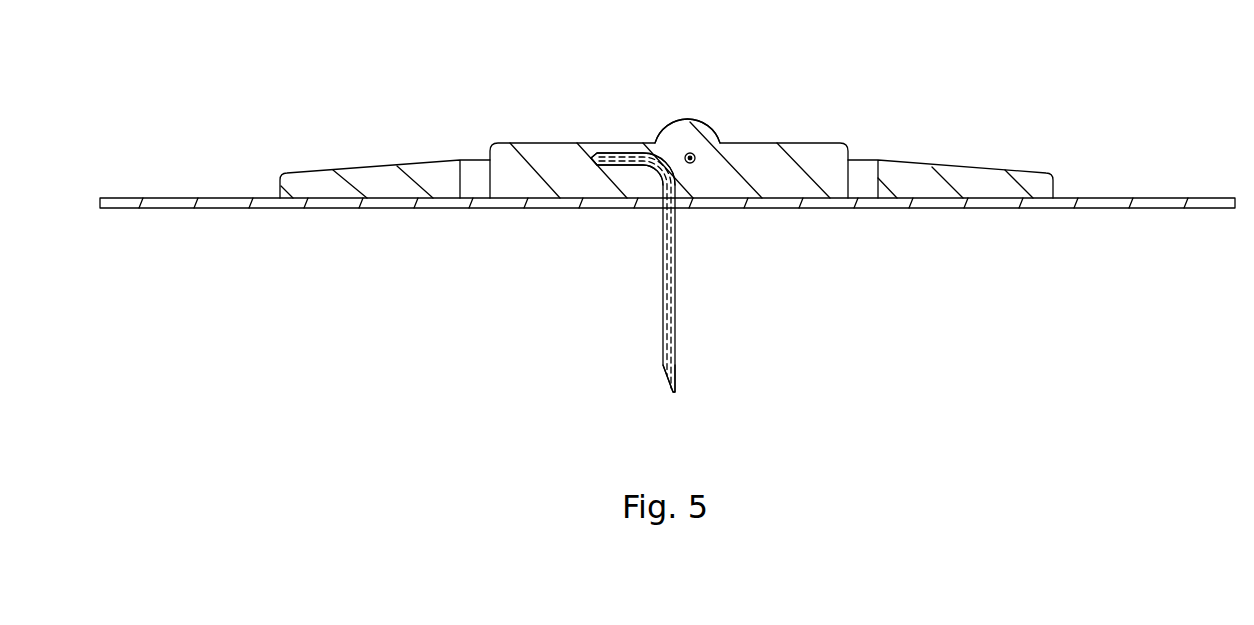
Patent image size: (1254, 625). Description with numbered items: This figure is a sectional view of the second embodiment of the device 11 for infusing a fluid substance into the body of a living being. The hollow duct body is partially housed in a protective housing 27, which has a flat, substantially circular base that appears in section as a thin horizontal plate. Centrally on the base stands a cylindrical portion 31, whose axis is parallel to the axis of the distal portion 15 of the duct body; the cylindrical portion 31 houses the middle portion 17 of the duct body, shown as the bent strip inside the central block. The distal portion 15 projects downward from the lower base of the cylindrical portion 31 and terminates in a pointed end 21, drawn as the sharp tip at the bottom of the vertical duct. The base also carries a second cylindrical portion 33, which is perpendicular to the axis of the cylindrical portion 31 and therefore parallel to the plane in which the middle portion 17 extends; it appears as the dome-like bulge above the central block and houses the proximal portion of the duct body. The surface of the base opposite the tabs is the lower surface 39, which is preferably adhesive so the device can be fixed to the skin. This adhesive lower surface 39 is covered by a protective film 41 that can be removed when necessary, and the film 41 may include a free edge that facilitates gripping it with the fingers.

The device for infusing a fluid substance 11 is at (213, 350).
The distal portion 15 is at (675, 296).
The middle portion 17 is at (606, 170).
The pointed end 21 is at (675, 380).
The protective housing 27 is at (333, 140).
The cylindrical portion 31 is at (833, 155).
The second cylindrical portion 33 is at (705, 123).
The lower surface 39 is at (1068, 208).
The protective film 41 is at (340, 208).